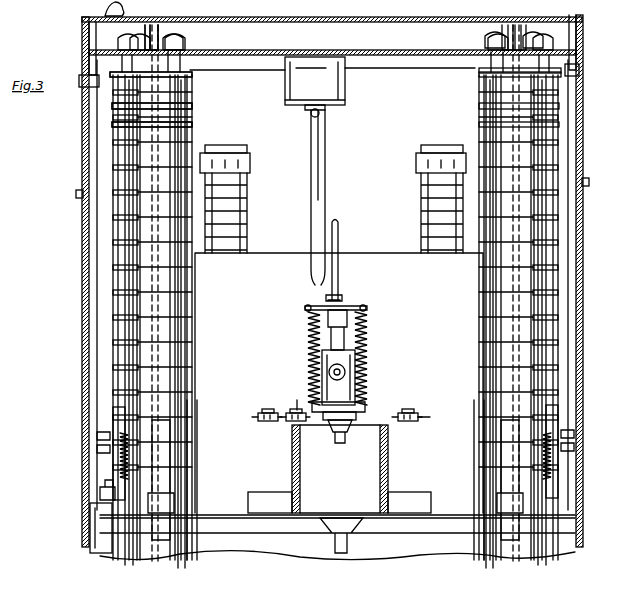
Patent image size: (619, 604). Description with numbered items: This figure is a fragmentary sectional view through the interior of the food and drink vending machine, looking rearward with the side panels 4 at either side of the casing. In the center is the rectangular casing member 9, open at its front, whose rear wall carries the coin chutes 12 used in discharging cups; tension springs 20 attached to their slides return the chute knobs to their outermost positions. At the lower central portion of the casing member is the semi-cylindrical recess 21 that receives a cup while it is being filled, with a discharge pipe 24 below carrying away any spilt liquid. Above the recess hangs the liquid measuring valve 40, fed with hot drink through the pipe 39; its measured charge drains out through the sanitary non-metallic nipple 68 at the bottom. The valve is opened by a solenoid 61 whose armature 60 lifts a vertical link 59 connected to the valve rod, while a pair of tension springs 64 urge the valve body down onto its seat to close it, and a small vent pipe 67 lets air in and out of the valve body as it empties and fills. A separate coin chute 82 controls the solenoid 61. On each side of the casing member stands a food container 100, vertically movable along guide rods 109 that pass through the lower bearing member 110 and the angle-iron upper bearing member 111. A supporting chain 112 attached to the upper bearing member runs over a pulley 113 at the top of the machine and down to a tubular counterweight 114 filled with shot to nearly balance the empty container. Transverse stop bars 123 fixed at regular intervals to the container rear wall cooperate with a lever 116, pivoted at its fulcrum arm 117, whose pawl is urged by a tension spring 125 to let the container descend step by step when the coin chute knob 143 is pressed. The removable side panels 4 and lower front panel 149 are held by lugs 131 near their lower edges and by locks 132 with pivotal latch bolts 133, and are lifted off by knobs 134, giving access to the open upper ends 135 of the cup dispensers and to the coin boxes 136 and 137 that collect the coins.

The removable upper side panel 4 is at (84, 265).
The rectangular casing member 9 is at (383, 253).
The coin chute 12 is at (270, 412).
The tension spring 20 is at (426, 414).
The semi-cylindrical recess 21 is at (388, 454).
The discharge pipe 24 is at (348, 542).
The pipe 39 is at (345, 375).
The liquid measuring valve 40 is at (355, 360).
The vertical link 59 is at (325, 165).
The armature 60 is at (323, 112).
The solenoid 61 is at (345, 78).
The tension spring 64 is at (310, 326).
The vent pipe 67 is at (340, 223).
The sanitary non-metallic nipple 68 is at (334, 443).
The coin chute 82 is at (296, 400).
The food container 100 is at (145, 95).
The guide rod 109 is at (118, 123).
The lower bearing member 110 is at (175, 499).
The upper bearing member 111 is at (180, 70).
The supporting chain 112 is at (155, 82).
The pulley 113 is at (155, 35).
The counterweight 114 is at (175, 470).
The lever 116 is at (113, 418).
The fulcrum arm 117 is at (98, 440).
The transverse stop bar 123 is at (116, 345).
The tension spring 125 is at (120, 470).
The lug 131 is at (100, 503).
The lock 132 is at (79, 90).
The pivotal latch bolt 133 is at (89, 66).
The knob 134 is at (77, 192).
The open upper end of cup dispenser 135 is at (250, 157).
The coin box 136 is at (420, 492).
The coin box 137 is at (266, 492).
The knob 143 is at (105, 12).
The lower removable panel 149 is at (413, 562).